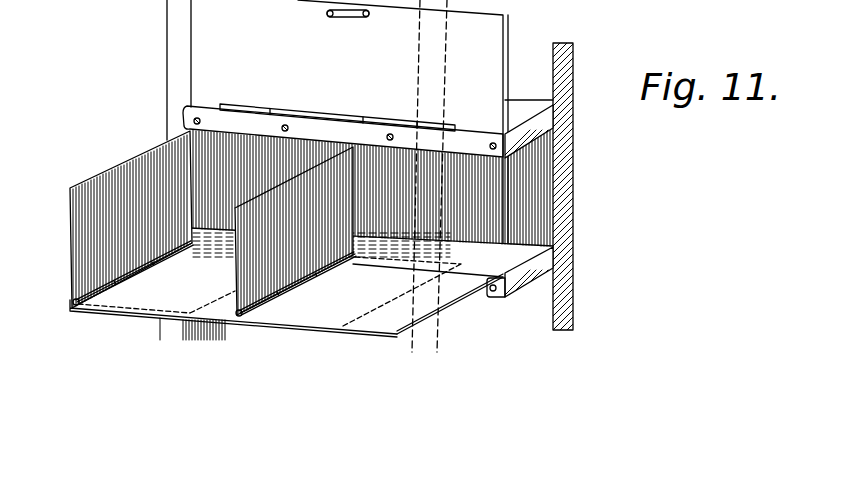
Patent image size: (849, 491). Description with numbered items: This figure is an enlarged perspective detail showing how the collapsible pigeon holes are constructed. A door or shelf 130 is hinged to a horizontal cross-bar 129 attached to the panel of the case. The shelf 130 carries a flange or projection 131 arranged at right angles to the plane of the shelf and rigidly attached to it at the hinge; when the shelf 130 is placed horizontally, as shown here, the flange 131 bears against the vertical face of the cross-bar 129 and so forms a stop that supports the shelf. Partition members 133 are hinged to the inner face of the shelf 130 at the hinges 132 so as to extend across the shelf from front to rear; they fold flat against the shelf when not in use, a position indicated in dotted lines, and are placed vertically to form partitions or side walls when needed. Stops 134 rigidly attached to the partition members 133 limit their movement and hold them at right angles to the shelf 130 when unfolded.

The horizontal cross-bar 129 is at (523, 142).
The door or shelf 130 is at (480, 332).
The flange or projection 131 is at (432, 127).
The hinge 132 is at (304, 286).
The partition member 133 is at (303, 172).
The stop 134 is at (320, 287).